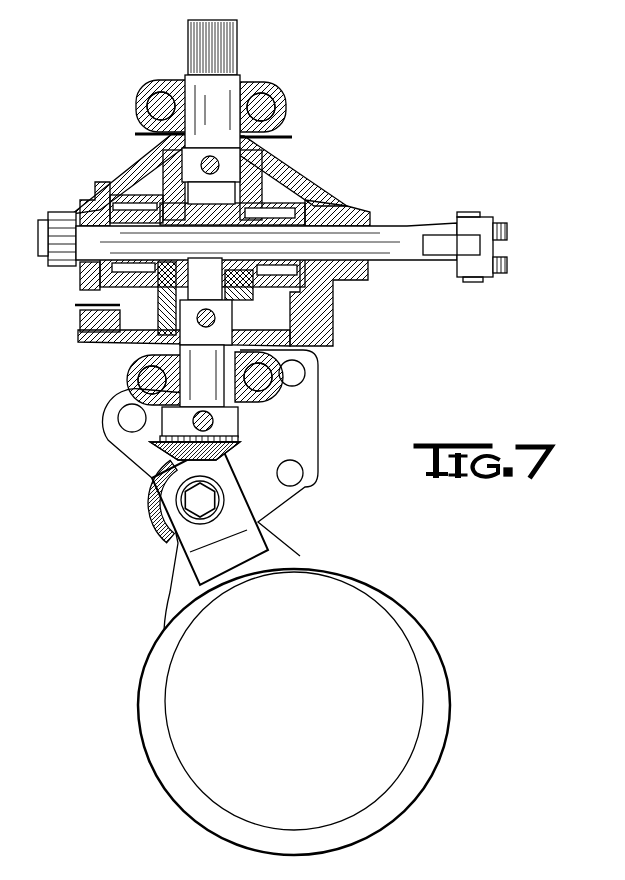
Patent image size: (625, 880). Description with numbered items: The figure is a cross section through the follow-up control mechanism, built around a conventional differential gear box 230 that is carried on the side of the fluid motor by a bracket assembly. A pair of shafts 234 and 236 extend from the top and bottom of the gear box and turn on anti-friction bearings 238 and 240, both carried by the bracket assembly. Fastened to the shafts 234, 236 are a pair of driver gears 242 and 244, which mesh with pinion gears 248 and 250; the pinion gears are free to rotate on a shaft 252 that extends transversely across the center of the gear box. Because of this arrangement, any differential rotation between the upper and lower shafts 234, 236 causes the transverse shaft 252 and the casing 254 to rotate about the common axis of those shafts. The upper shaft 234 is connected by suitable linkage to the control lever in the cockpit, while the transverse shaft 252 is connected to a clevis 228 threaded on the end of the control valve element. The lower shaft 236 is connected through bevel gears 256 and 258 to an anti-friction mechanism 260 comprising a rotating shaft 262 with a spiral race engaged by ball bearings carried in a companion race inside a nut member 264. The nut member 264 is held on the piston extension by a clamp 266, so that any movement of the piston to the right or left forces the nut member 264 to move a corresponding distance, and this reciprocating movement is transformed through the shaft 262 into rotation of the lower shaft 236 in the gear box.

The clevis 228 is at (483, 249).
The differential gear box 230 is at (382, 152).
The shaft 234 is at (220, 58).
The shaft 236 is at (212, 392).
The anti-friction bearing 238 is at (248, 86).
The anti-friction bearing 240 is at (177, 370).
The driver gear 242 is at (142, 158).
The driver gear 244 is at (172, 313).
The pinion gear 248 is at (133, 197).
The pinion gear 250 is at (303, 196).
The shaft 252 is at (290, 238).
The casing 254 is at (325, 316).
The bevel gear 256 is at (165, 424).
The bevel gear 258 is at (250, 488).
The anti-friction mechanism 260 is at (152, 512).
The rotating shaft 262 is at (197, 500).
The nut member 264 is at (240, 462).
The clamp 266 is at (417, 630).